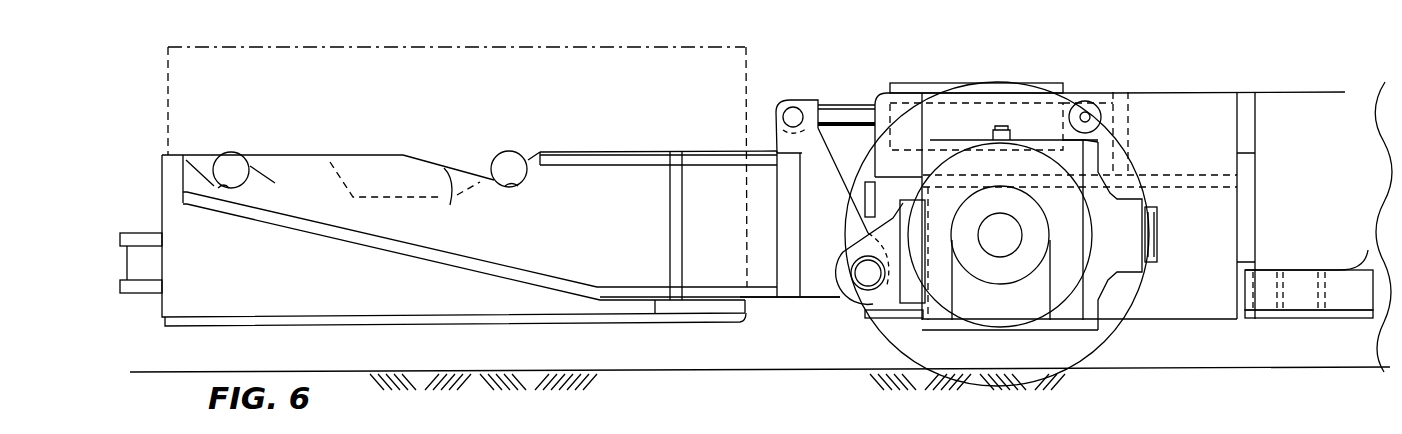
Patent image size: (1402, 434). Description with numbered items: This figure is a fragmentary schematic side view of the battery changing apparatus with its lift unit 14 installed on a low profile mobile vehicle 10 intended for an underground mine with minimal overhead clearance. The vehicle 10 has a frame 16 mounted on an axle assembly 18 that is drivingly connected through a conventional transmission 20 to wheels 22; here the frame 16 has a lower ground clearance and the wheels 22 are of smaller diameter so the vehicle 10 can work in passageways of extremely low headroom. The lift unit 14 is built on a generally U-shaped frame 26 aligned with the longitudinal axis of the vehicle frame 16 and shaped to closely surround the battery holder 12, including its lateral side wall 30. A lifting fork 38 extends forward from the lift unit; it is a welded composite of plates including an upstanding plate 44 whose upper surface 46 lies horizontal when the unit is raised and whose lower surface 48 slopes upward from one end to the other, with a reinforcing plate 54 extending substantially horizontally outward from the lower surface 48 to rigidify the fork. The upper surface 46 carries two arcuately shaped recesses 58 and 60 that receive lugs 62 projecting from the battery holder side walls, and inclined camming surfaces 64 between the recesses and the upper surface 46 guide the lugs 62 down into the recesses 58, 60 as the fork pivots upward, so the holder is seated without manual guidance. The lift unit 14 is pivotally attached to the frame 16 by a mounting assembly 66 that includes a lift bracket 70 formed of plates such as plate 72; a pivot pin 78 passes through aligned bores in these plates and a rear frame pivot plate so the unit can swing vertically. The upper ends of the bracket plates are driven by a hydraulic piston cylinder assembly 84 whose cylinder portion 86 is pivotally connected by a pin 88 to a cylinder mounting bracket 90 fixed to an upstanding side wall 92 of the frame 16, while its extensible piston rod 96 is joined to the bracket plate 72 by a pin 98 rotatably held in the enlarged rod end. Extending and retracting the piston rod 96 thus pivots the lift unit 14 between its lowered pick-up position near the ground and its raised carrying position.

The mobile vehicle 10 is at (1274, 70).
The battery holder 12 is at (161, 180).
The lift unit 14 is at (712, 94).
The vehicle frame 16 is at (1310, 318).
The axle assembly 18 is at (1112, 276).
The transmission 20 is at (1150, 215).
The wheels 22 is at (1092, 352).
The U-shaped frame 26 is at (758, 273).
The lateral side wall 30 is at (210, 283).
The lifting fork 38 is at (583, 215).
The upstanding plate 44 is at (387, 222).
The upper surface 46 is at (406, 179).
The lower surface 48 is at (455, 247).
The reinforcing plate 54 is at (547, 285).
The arcuately shaped recess 58 is at (520, 187).
The arcuately shaped recess 60 is at (222, 185).
The lugs 62 is at (230, 163).
The camming surfaces 64 is at (357, 196).
The mounting assembly 66 is at (805, 69).
The lift bracket 70 is at (852, 143).
The plate 72 is at (806, 217).
The pivot pin 78 is at (861, 278).
The piston cylinder assembly 84 is at (1052, 71).
The cylinder portion 86 is at (928, 86).
The pin 88 is at (1086, 112).
The cylinder mounting bracket 90 is at (1110, 100).
The upstanding side wall 92 is at (1177, 98).
The piston rod 96 is at (828, 105).
The pin 98 is at (791, 108).